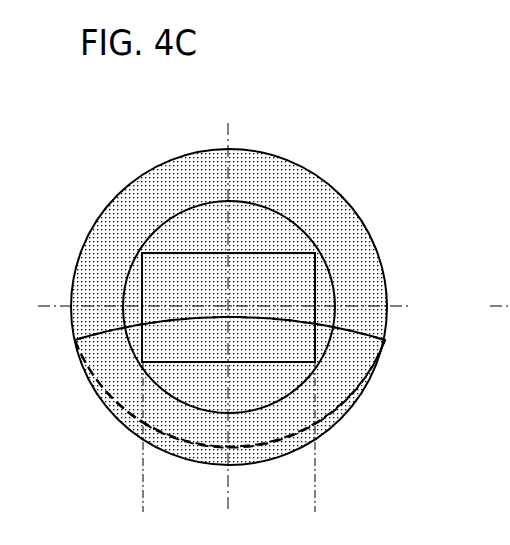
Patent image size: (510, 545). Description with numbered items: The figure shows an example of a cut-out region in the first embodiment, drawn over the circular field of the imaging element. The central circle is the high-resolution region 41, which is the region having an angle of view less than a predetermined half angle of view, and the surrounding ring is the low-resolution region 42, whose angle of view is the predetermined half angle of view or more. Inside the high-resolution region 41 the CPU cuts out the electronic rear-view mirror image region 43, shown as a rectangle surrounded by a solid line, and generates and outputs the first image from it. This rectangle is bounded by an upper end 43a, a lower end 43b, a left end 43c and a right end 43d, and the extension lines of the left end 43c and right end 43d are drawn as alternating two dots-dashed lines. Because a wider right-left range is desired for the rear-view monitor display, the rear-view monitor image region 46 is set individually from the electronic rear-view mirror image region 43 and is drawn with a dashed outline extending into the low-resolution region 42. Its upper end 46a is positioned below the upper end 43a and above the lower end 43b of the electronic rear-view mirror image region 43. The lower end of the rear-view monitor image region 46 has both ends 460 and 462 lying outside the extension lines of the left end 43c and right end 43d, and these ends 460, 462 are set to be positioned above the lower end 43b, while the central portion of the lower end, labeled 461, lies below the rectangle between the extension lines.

The high-resolution region 41 is at (243, 220).
The low-resolution region 42 is at (323, 213).
The electronic rear-view mirror image region 43 is at (318, 284).
The upper end of the electronic rear-view mirror image region 43a is at (172, 250).
The lower end of the electronic rear-view mirror image region 43b is at (250, 362).
The left end of the electronic rear-view mirror image region 43c is at (143, 278).
The right end of the electronic rear-view mirror image region 43d is at (318, 268).
The rear-view monitor image region 46 is at (362, 395).
The upper end of the rear-view monitor image region 46a is at (270, 317).
The left end of the lower end of the rear-view monitor image region 460 is at (77, 347).
The bottom portion of light shielding member 461 is at (227, 443).
The right end of the lower end of the rear-view monitor image region 462 is at (387, 340).